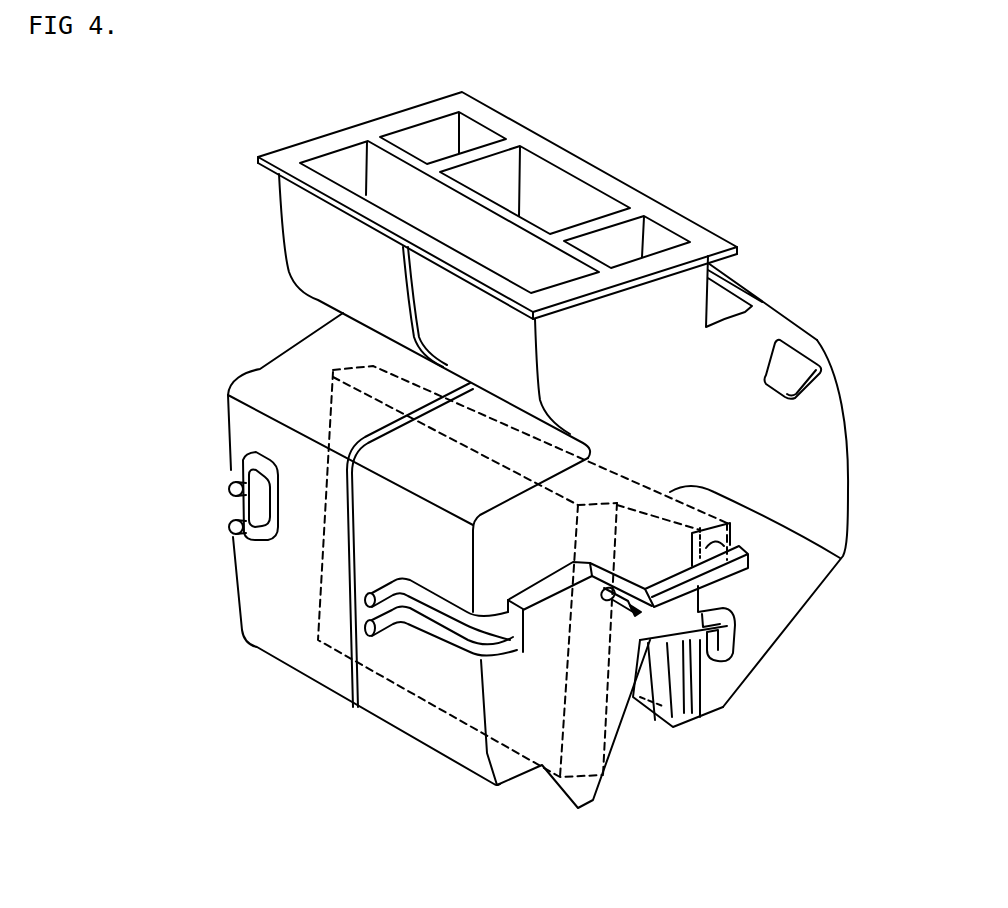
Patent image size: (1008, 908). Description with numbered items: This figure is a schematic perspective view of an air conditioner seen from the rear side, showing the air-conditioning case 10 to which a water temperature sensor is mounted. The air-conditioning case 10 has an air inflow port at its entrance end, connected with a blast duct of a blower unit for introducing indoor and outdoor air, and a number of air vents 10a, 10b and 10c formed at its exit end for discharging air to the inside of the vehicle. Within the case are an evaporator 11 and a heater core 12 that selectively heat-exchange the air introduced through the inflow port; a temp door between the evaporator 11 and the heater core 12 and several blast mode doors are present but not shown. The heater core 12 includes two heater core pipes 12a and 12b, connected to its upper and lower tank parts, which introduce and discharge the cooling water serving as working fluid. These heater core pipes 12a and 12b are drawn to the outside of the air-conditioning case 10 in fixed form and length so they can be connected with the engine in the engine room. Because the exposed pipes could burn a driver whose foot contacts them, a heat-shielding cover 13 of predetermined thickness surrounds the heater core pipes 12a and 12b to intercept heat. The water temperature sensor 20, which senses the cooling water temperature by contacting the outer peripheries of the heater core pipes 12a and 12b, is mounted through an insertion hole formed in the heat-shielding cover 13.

The air-conditioning case 10 is at (787, 624).
The air vent 10a is at (343, 163).
The air vent 10b is at (632, 233).
The air vent 10c is at (793, 363).
The evaporator 11 is at (290, 607).
The heater core 12 is at (843, 556).
The heater core pipe 12a is at (437, 605).
The heater core pipe 12b is at (457, 643).
The heat-shielding cover 13 is at (690, 720).
The water temperature sensor 20 is at (647, 715).